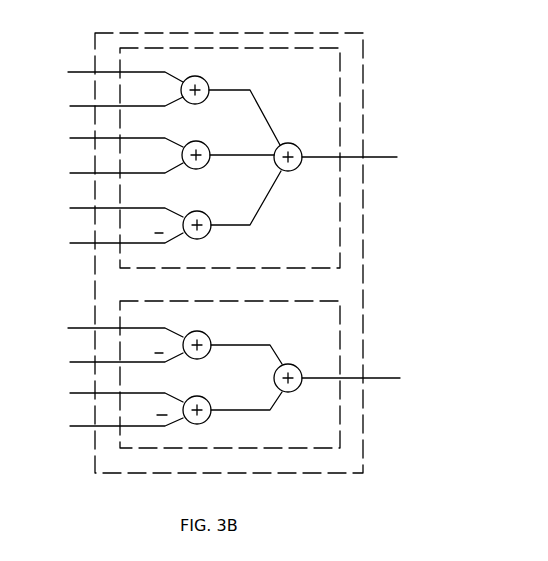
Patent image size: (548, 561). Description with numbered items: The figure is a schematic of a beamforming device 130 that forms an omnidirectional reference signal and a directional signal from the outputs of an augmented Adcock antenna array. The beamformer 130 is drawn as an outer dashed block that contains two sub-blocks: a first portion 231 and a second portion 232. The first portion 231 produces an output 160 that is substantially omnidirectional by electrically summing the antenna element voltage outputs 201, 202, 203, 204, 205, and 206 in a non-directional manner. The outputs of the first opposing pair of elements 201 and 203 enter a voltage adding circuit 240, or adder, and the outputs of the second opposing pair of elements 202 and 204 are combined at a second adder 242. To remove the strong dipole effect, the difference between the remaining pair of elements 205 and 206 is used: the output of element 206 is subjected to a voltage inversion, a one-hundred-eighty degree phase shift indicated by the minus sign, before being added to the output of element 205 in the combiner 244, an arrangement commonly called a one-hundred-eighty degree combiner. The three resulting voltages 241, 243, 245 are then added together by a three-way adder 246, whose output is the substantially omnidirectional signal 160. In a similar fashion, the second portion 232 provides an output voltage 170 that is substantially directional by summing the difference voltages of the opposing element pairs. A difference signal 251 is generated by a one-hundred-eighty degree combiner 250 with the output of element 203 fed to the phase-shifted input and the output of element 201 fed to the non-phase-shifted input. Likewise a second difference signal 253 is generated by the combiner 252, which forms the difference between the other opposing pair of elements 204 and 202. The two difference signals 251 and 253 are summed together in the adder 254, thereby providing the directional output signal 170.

The beamforming device 130 is at (364, 62).
The omnidirectional output signal 160 is at (373, 156).
The directional output signal 170 is at (373, 377).
The antenna element voltage output 201 is at (105, 199).
The antenna element voltage output 202 is at (106, 281).
The antenna element voltage output 203 is at (106, 234).
The antenna element voltage output 204 is at (106, 282).
The antenna element voltage output 205 is at (109, 207).
The antenna element voltage output 206 is at (109, 242).
The first portion 231 is at (338, 98).
The second portion 232 is at (340, 333).
The voltage adding circuit 240 is at (208, 79).
The resulting voltage 241 is at (264, 108).
The second adder 242 is at (197, 141).
The resulting voltage 243 is at (235, 155).
The 180° combiner 244 is at (202, 211).
The resulting voltage 245 is at (268, 193).
The three-way adder 246 is at (295, 144).
The 180° combiner 250 is at (206, 331).
The difference signal 251 is at (258, 344).
The 180° combiner 252 is at (196, 396).
The second difference signal 253 is at (264, 408).
The adder 254 is at (285, 365).